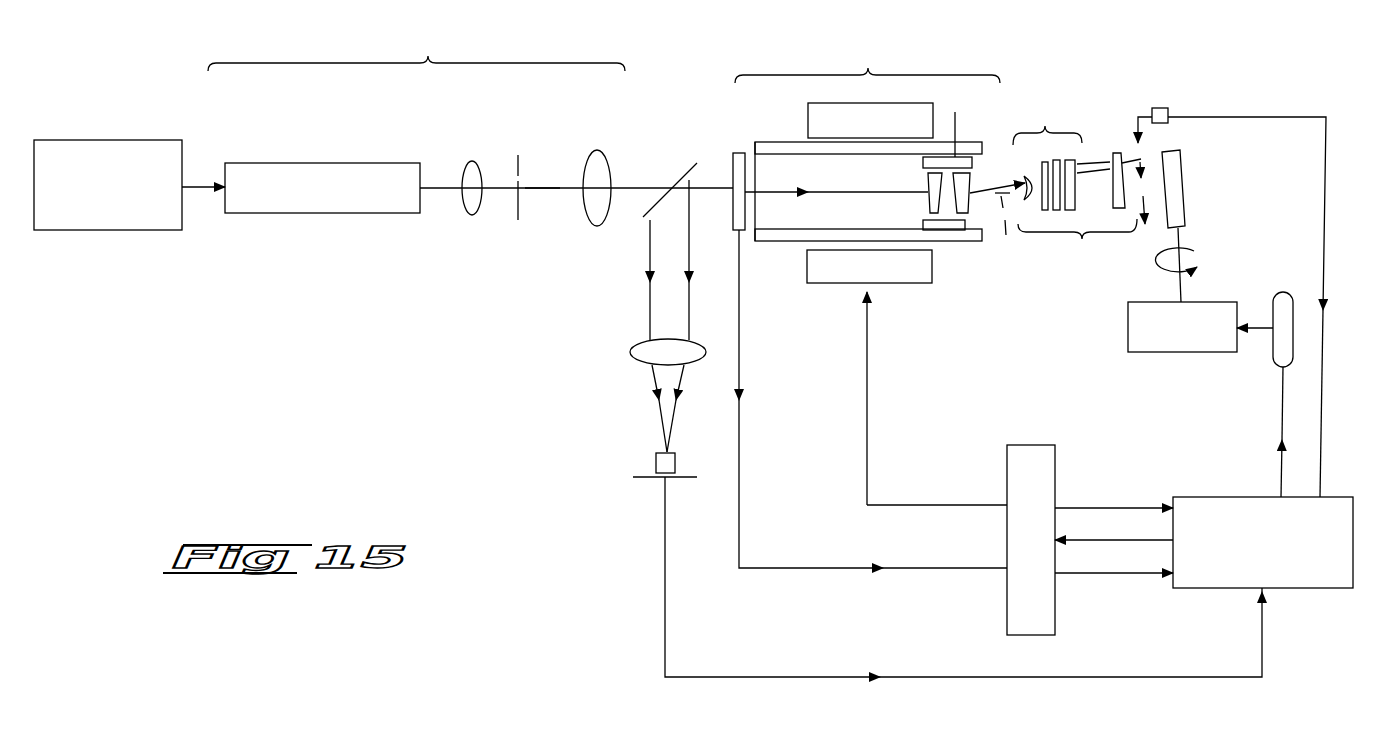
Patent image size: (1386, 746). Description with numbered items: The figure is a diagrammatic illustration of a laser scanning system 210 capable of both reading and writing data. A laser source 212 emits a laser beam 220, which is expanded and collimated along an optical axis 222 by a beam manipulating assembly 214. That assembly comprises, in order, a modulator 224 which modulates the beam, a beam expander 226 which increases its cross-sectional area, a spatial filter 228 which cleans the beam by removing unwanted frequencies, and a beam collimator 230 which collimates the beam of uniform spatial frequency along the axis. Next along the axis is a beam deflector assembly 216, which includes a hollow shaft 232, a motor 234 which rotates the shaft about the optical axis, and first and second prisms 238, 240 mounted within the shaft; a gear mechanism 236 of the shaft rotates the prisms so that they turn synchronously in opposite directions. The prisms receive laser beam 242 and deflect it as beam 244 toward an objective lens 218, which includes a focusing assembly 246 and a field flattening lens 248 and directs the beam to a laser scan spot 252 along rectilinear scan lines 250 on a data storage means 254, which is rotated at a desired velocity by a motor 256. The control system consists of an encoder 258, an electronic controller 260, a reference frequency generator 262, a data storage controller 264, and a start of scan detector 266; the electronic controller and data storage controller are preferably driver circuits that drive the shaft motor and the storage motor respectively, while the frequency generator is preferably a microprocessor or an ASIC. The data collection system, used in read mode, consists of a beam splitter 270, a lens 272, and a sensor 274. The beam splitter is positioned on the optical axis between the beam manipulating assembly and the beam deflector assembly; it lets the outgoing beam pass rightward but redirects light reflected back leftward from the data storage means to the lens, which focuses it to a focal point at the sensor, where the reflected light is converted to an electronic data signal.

The laser scanning system 210 is at (503, 347).
The laser source 212 is at (118, 233).
The beam manipulating assembly 214 is at (416, 50).
The beam deflector assembly 216 is at (867, 61).
The objective lens 218 is at (1077, 246).
The laser beam 220 is at (222, 187).
The optical axis 222 is at (542, 192).
The modulator 224 is at (320, 162).
The beam expander 226 is at (467, 217).
The spatial filter 228 is at (520, 163).
The beam collimator 230 is at (585, 220).
The hollow shaft 232 is at (773, 142).
The motor 234 is at (927, 115).
The gear mechanism 236 is at (966, 118).
The first prism 238 is at (932, 185).
The second prism 240 is at (973, 233).
The laser beam 242 is at (773, 193).
The beam 244 is at (992, 183).
The focusing assembly 246 is at (1061, 155).
The field flattening lens 248 is at (1140, 158).
The scan lines 250 is at (1147, 157).
The laser scan spot 252 is at (1140, 157).
The data storage means 254 is at (1185, 178).
The motor 256 is at (1128, 330).
The encoder 258 is at (733, 157).
The electronic controller 260 is at (1006, 472).
The reference frequency generator 262 is at (1315, 590).
The data storage controller 264 is at (1285, 292).
The start of scan (SOS) detector 266 is at (1165, 108).
The beam splitter 270 is at (680, 180).
The lens 272 is at (637, 365).
The sensor 274 is at (655, 463).